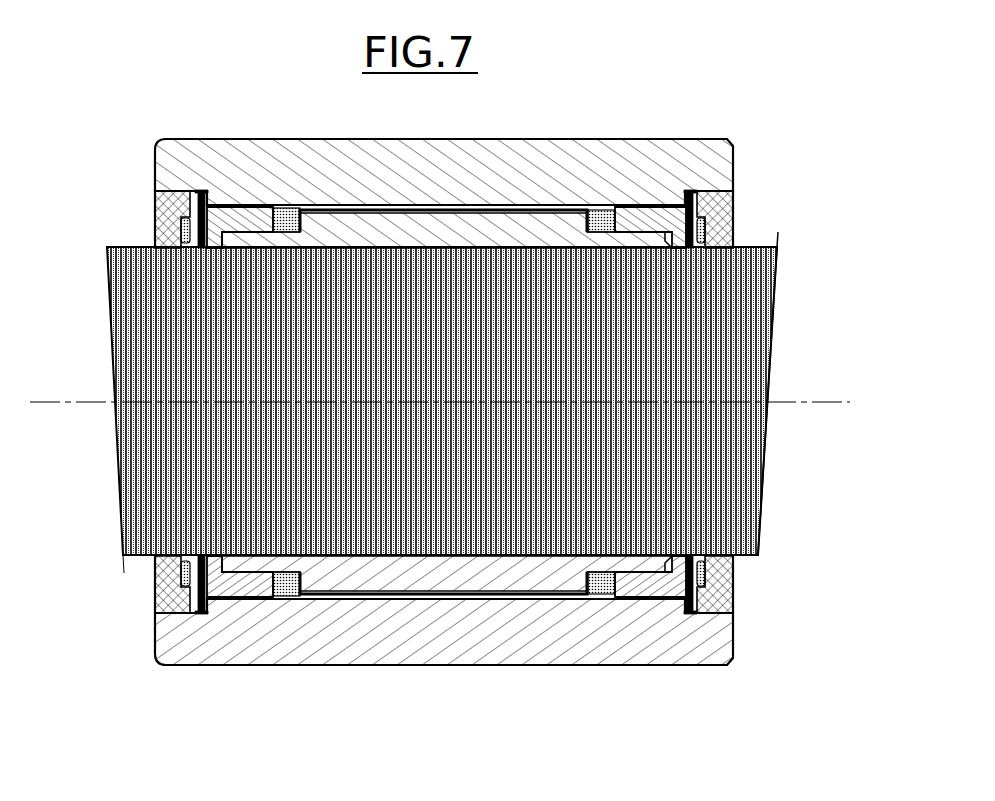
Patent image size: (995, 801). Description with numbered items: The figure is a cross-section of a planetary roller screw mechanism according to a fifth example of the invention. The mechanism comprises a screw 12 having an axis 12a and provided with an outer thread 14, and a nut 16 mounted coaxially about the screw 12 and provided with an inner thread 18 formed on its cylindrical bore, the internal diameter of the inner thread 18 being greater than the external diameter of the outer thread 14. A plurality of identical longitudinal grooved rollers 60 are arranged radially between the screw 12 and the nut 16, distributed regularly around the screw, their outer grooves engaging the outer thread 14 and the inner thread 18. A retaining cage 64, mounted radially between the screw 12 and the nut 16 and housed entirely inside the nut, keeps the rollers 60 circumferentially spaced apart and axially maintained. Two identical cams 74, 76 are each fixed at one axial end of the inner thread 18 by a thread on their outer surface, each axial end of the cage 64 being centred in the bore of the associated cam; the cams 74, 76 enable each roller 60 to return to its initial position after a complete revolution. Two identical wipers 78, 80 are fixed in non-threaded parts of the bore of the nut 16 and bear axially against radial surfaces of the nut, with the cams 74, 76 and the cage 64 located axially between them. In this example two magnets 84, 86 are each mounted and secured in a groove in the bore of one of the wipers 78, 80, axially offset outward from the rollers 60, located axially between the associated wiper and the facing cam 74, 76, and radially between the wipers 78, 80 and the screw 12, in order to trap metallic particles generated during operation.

The screw 12 is at (131, 243).
The axis 12a is at (820, 400).
The outer thread 14 is at (757, 247).
The nut 16 is at (258, 134).
The inner thread 18 is at (595, 205).
The grooved rollers 60 is at (277, 606).
The retaining cage 64 is at (489, 580).
The cam 74 is at (243, 598).
The cam 76 is at (648, 583).
The wiper 78 is at (173, 593).
The wiper 80 is at (713, 592).
The magnet 84 is at (185, 208).
The magnet 86 is at (699, 207).